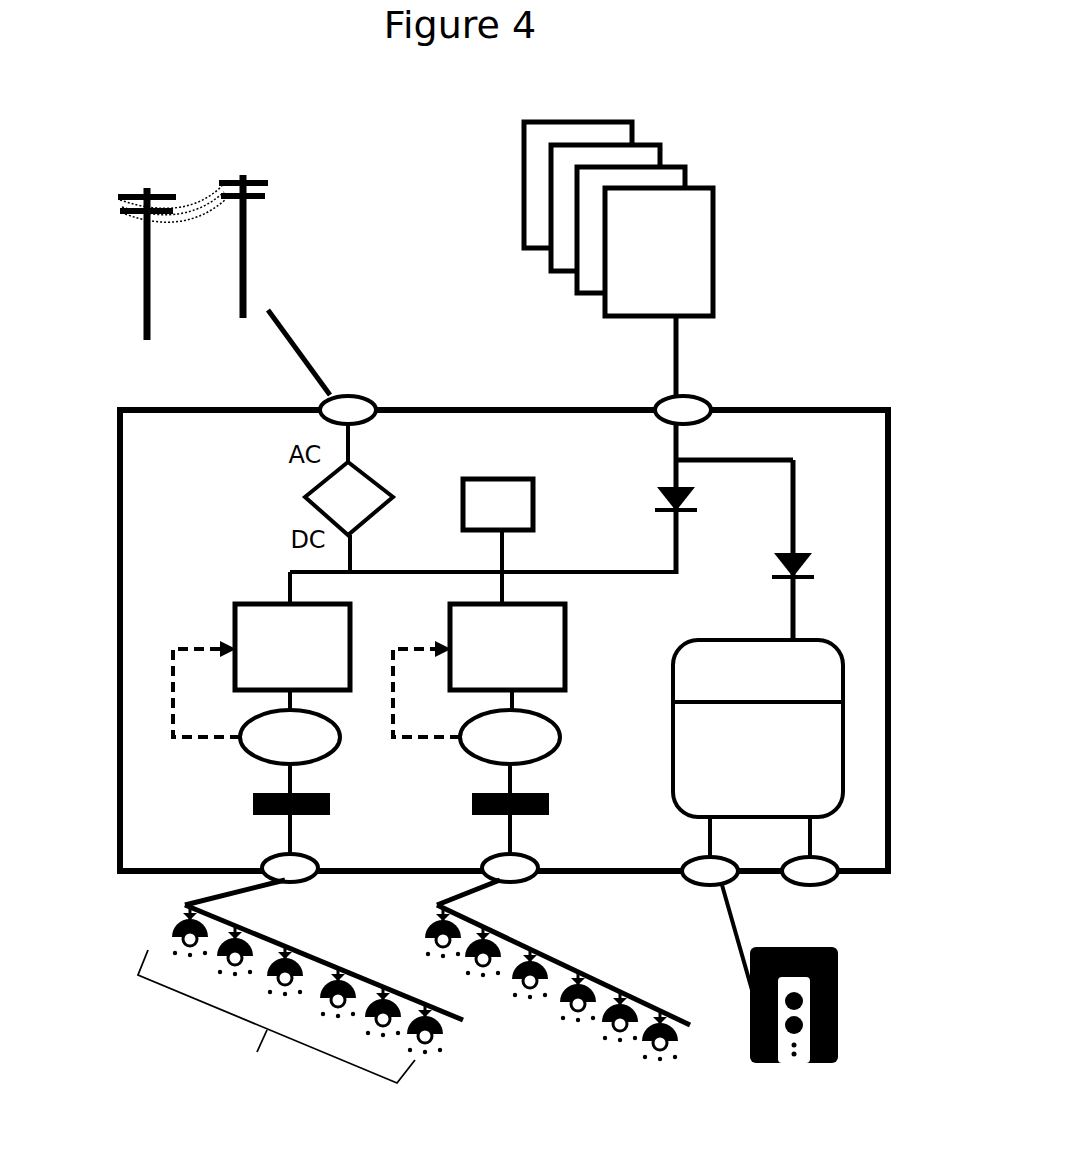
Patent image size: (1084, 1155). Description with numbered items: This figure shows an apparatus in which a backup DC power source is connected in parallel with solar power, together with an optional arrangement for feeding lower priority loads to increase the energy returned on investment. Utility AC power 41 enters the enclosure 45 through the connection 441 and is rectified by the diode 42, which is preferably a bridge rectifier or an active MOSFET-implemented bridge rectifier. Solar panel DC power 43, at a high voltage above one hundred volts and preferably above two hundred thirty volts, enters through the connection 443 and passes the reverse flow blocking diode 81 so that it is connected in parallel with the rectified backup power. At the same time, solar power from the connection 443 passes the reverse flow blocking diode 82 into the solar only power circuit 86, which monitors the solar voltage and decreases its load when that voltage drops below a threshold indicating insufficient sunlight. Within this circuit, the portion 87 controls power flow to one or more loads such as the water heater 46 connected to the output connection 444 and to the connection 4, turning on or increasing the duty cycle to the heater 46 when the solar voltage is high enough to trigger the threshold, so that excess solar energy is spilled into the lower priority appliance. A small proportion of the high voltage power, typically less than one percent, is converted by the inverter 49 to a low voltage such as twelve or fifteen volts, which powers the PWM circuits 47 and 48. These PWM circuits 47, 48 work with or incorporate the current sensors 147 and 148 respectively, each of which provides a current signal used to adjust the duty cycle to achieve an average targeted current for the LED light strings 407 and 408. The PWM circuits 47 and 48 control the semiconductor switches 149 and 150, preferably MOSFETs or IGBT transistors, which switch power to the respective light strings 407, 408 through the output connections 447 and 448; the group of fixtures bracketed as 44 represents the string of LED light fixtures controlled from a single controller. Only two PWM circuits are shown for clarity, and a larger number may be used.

The utility AC power 41 is at (191, 183).
The solar panel DC power 43 is at (700, 163).
The enclosure 45 is at (850, 395).
The connection 441 is at (365, 395).
The connection 443 is at (660, 397).
The diode 42 is at (349, 498).
The inverter 49 is at (498, 504).
The reverse flow blocking diode 81 is at (703, 497).
The reverse flow blocking diode 82 is at (838, 570).
The PWM circuit 47 is at (230, 625).
The PWM circuit 48 is at (575, 658).
The current sensor 147 is at (290, 737).
The current sensor 148 is at (510, 737).
The semiconductor switch 149 is at (238, 800).
The semiconductor switch 150 is at (468, 822).
The output port 447 is at (262, 842).
The output port 448 is at (523, 888).
The output connection 444 is at (697, 895).
The connection 4 is at (825, 893).
The solar only power circuit 86 is at (758, 728).
The portion 87 is at (758, 759).
The light string 44 is at (276, 1023).
The LED light string 407 is at (435, 1052).
The LED light string 408 is at (655, 1072).
The water heater 46 is at (840, 1020).